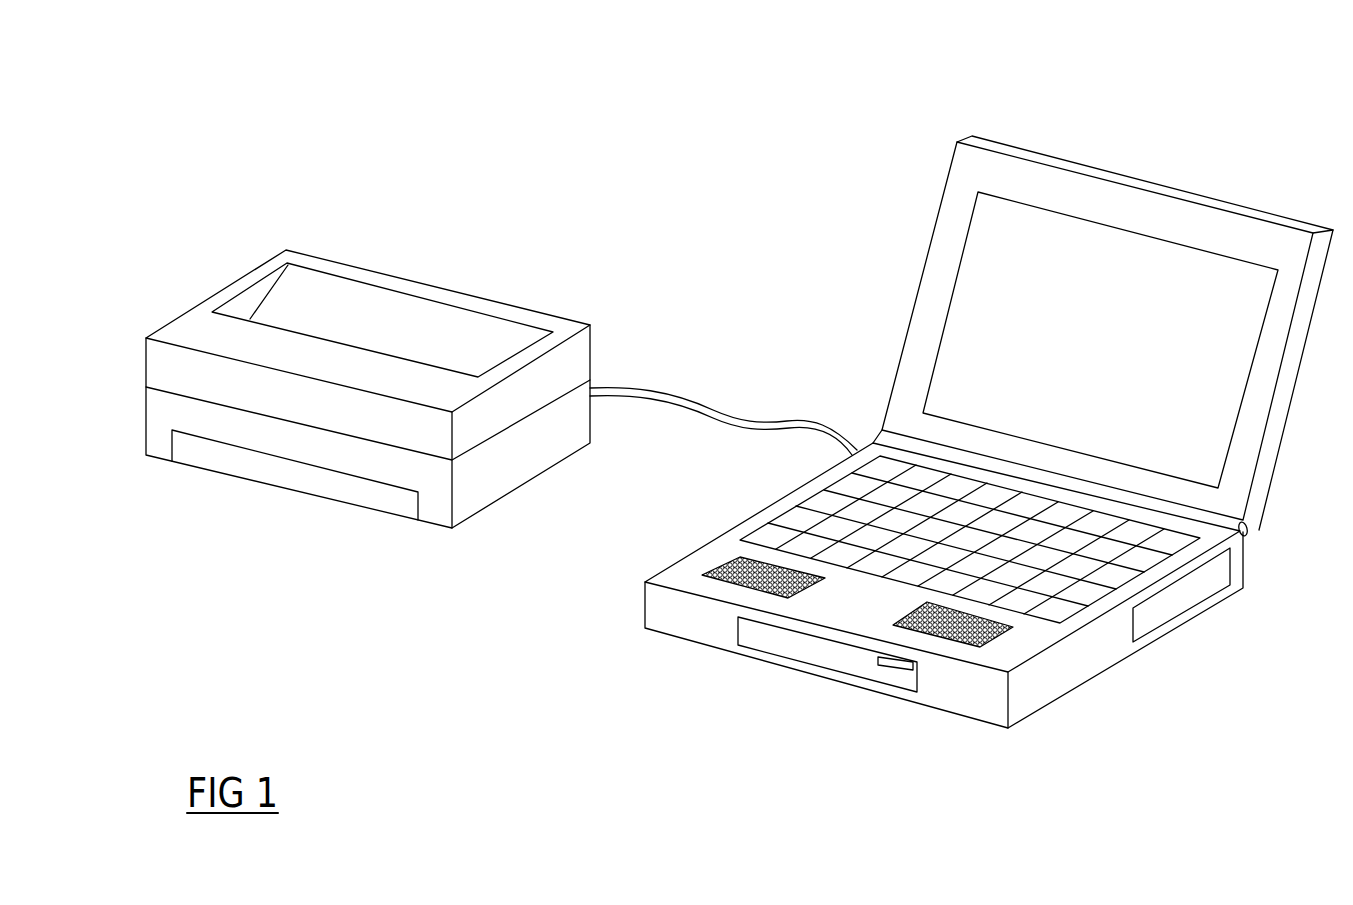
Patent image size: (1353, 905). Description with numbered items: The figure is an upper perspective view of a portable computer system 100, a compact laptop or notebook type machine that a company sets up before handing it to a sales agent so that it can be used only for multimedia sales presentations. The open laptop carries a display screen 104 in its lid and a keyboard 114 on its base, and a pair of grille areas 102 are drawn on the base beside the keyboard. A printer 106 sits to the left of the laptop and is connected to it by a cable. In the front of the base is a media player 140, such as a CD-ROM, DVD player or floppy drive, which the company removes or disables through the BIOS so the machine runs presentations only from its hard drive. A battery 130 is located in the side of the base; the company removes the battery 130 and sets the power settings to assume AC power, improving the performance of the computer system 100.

The portable computer system 100 is at (832, 440).
The speaker grilles / vents 102 is at (730, 558).
The display screen 104 is at (1012, 270).
The printer 106 is at (390, 315).
The keyboard 114 is at (870, 488).
The battery 130 is at (1175, 600).
The media player 140 is at (793, 645).